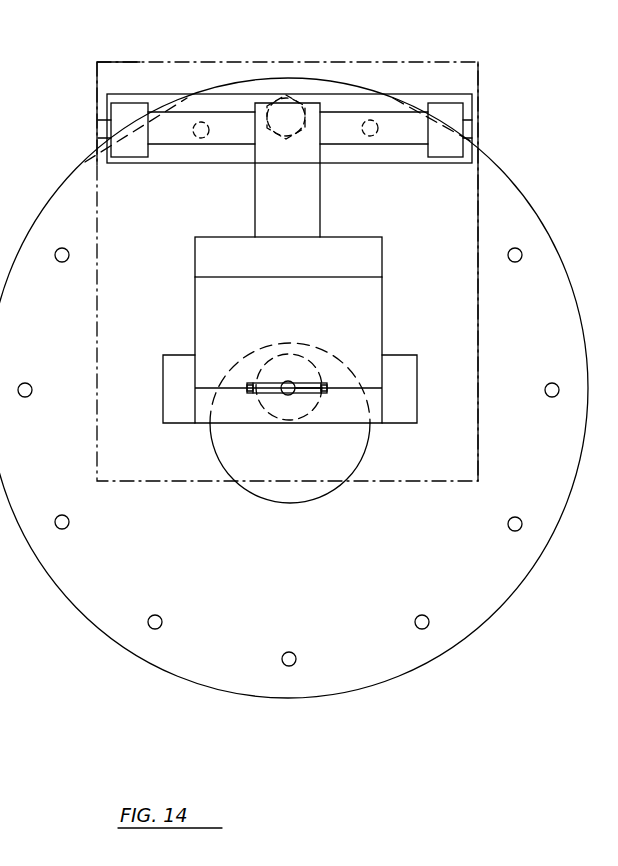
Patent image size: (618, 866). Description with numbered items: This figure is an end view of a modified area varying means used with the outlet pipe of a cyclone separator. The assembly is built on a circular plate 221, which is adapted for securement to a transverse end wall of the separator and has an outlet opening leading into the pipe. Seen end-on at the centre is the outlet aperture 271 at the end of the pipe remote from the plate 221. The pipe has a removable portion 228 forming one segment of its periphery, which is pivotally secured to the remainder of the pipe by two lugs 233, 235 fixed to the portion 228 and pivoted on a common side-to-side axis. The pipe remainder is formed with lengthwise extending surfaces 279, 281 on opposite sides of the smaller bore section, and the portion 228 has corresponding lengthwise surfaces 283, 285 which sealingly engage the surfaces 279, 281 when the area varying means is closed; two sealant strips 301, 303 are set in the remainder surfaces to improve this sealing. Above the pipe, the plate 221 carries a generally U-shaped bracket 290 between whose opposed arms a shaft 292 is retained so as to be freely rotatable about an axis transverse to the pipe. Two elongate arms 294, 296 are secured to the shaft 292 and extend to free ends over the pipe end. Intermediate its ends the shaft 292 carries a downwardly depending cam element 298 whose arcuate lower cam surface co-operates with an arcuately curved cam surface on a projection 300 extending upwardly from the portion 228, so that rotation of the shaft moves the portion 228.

The circular plate 221 is at (553, 508).
The removable portion 228 is at (207, 302).
The lug 233 is at (185, 417).
The lug 235 is at (400, 410).
The outlet aperture 271 is at (293, 383).
The lengthwise extending surface 279 is at (238, 392).
The lengthwise extending surface 281 is at (302, 393).
The lengthwise extending surface 283 is at (290, 416).
The lengthwise extending surface 285 is at (360, 377).
The U-shaped bracket 290 is at (423, 102).
The shaft 292 is at (170, 120).
The elongate arm 294 is at (122, 110).
The elongate arm 296 is at (342, 103).
The cam element 298 is at (311, 209).
The projection 300 is at (370, 258).
The sealant strip 301 is at (270, 393).
The sealant strip 303 is at (307, 393).